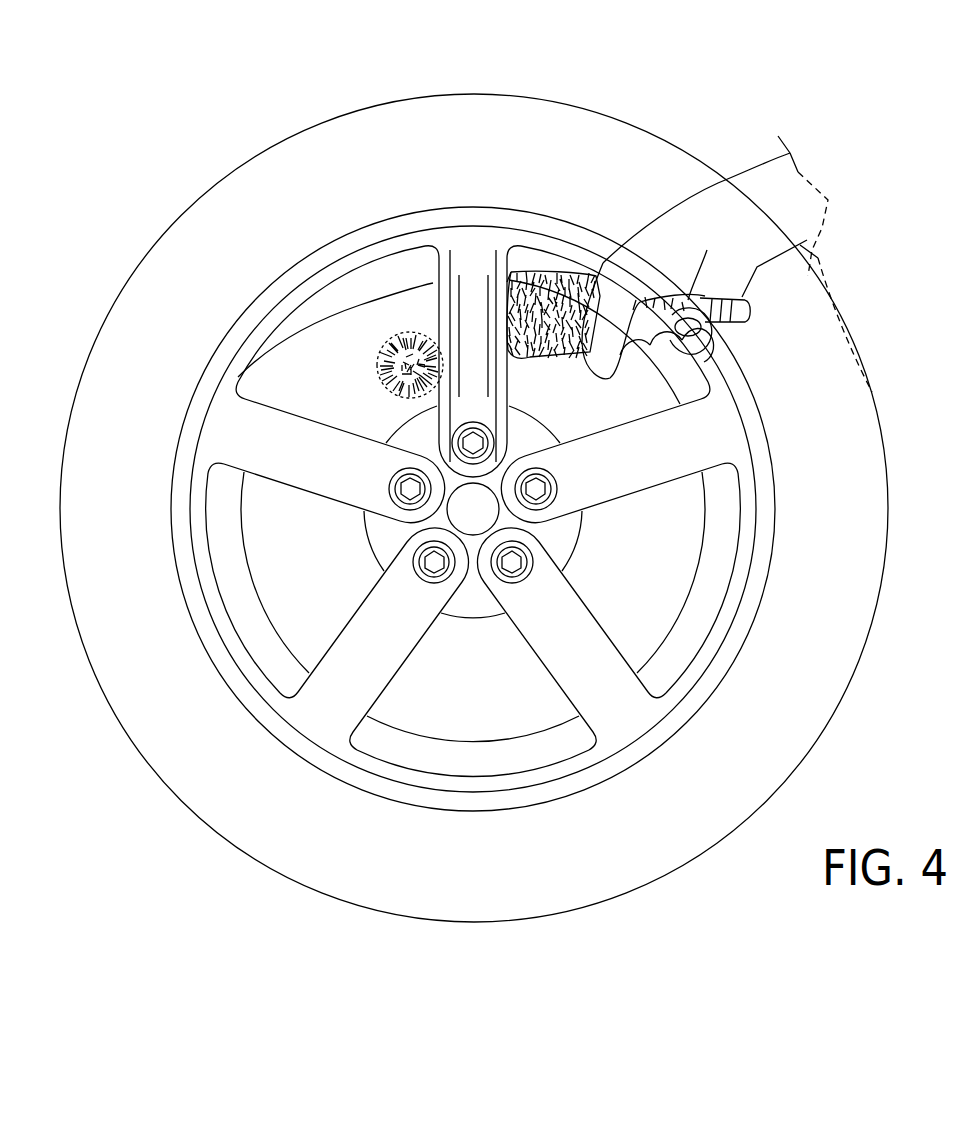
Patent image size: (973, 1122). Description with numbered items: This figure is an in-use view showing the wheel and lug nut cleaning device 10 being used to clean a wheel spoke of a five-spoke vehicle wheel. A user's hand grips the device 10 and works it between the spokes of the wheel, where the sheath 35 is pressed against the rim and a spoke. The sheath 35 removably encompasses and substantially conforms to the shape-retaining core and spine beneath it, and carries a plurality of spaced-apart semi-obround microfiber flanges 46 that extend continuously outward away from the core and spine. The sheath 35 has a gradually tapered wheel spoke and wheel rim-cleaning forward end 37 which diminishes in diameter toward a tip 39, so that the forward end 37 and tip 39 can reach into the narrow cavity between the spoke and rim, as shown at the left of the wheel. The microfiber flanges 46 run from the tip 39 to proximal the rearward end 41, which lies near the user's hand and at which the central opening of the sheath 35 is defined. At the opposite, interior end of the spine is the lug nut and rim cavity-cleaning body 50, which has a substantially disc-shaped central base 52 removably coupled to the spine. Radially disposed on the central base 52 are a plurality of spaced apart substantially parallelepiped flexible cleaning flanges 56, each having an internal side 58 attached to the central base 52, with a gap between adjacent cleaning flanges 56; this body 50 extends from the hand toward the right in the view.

The wheel and lug nut cleaning device 10 is at (590, 208).
The sheath 35 is at (585, 188).
The microfiber flanges 46 is at (568, 277).
The forward end 37 is at (341, 227).
The tip 39 is at (377, 387).
The rearward end 41 is at (735, 312).
The central base 52 is at (819, 239).
The lug nut and rim cavity-cleaning body 50 is at (732, 313).
The internal side 58 is at (747, 310).
The cleaning flanges 56 is at (740, 343).